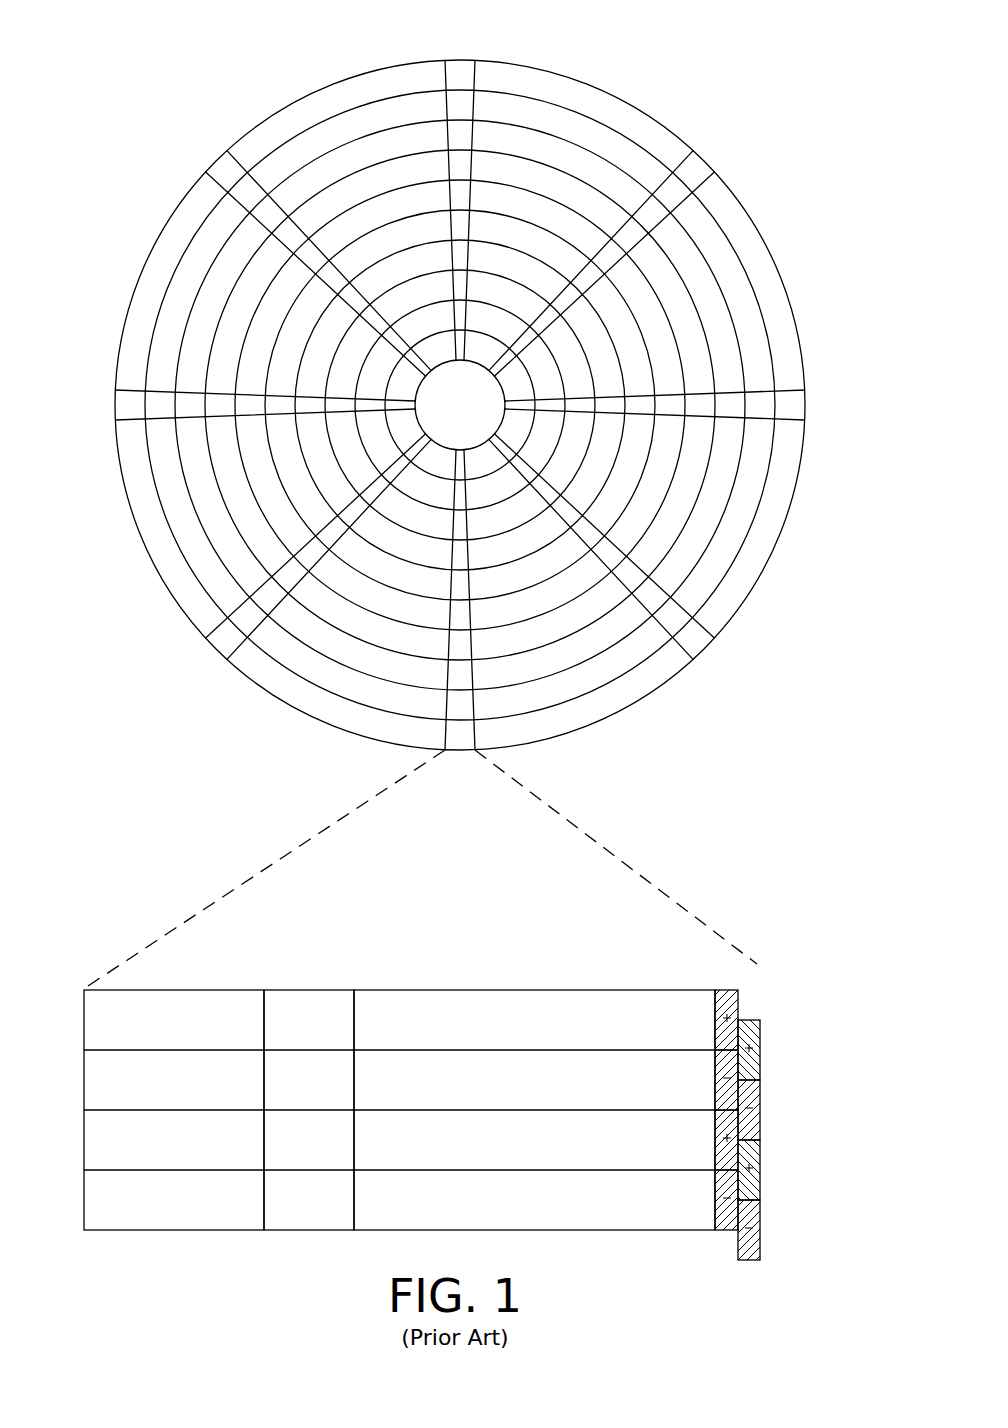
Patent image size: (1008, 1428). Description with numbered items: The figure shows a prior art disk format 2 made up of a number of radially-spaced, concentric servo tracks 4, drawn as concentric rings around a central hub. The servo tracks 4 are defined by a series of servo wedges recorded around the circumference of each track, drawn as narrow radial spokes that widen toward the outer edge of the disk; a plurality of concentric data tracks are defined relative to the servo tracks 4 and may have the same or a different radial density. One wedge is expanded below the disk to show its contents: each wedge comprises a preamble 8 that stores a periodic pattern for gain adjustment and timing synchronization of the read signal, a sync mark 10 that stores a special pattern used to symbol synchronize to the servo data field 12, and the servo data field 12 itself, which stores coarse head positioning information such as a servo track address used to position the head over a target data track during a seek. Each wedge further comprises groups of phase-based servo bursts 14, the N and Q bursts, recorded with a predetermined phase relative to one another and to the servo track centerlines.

The disk format 2 is at (205, 64).
The servo tracks 4 is at (577, 128).
The preamble 8 is at (183, 990).
The sync mark 10 is at (311, 990).
The servo data field 12 is at (521, 990).
The servo bursts 14 is at (758, 984).